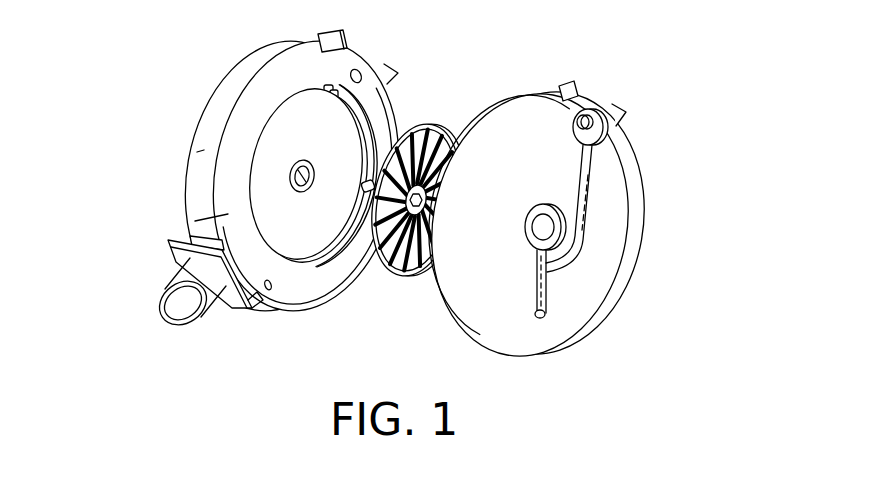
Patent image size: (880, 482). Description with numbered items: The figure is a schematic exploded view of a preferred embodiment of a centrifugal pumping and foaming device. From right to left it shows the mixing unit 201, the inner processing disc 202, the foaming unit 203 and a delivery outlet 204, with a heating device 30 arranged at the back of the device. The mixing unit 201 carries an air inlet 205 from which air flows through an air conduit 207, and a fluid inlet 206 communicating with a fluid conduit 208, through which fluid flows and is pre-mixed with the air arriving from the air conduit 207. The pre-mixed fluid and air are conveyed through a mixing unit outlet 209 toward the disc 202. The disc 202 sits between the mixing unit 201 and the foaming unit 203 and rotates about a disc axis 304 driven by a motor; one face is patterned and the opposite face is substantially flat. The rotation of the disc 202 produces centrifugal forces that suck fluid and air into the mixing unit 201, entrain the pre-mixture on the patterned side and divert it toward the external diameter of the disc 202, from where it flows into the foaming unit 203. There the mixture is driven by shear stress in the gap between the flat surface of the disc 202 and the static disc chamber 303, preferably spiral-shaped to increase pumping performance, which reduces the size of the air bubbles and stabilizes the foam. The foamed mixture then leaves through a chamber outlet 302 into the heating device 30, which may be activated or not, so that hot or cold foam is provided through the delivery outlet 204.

The heating device 30 is at (266, 164).
The chamber outlet 302 is at (325, 88).
The disc chamber 303 is at (265, 150).
The disc axis 304 is at (362, 189).
The foaming unit 203 is at (226, 200).
The delivery outlet 204 is at (172, 310).
The inner processing disc 202 is at (442, 126).
The mixing unit outlet 209 is at (542, 204).
The air inlet 205 is at (594, 116).
The mixing unit 201 is at (632, 212).
The air conduit 207 is at (584, 252).
The fluid conduit 208 is at (548, 284).
The fluid inlet 206 is at (544, 322).